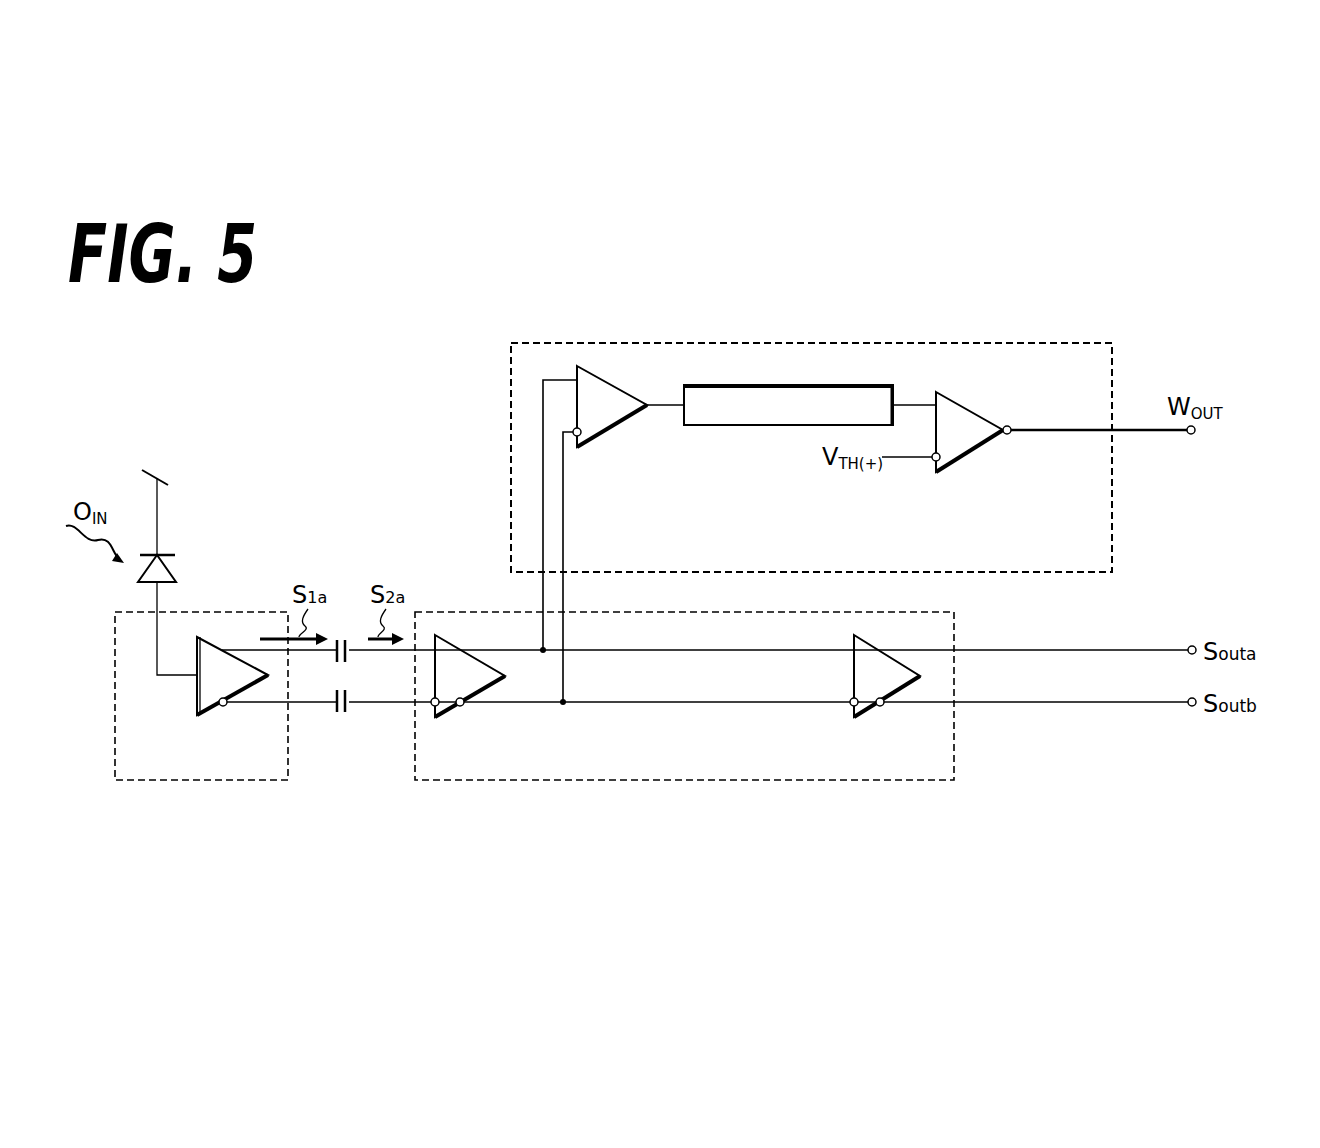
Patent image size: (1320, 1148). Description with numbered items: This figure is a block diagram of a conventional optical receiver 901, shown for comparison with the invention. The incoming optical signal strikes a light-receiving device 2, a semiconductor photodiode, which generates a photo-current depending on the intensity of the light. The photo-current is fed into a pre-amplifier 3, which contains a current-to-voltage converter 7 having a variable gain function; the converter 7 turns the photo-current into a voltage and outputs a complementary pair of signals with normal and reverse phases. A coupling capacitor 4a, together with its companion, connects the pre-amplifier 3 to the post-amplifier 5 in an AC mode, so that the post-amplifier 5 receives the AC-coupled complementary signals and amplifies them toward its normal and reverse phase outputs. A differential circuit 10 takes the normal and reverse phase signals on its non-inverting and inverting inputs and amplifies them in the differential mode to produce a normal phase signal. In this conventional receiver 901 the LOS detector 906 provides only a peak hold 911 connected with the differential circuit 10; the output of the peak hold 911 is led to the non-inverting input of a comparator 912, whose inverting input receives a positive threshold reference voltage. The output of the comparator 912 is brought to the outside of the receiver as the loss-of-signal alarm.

The light-receiving device 2 is at (176, 560).
The pre-amplifier 3 is at (237, 782).
The coupling capacitor 4a is at (345, 636).
The post-amplifier 5 is at (901, 782).
The current-to-voltage converter 7 is at (221, 708).
The differential circuit 10 is at (592, 446).
The conventional optical receiver 901 is at (1100, 267).
The LOS detector 906 is at (1021, 342).
The peak hold 911 is at (740, 428).
The comparator 912 is at (950, 470).